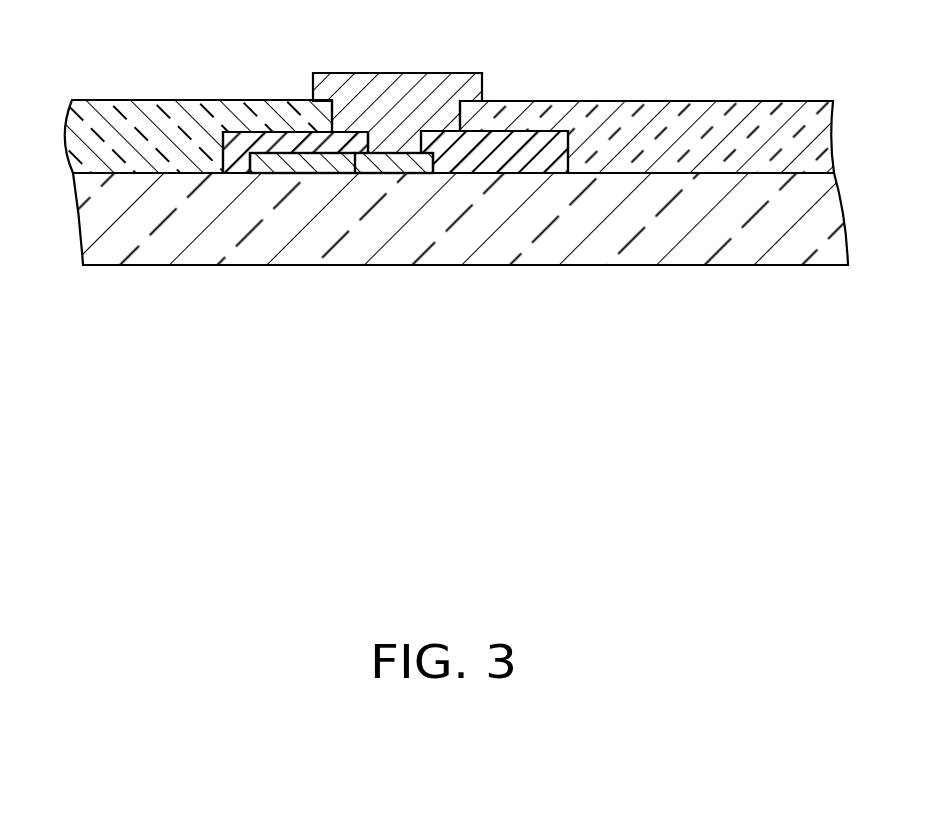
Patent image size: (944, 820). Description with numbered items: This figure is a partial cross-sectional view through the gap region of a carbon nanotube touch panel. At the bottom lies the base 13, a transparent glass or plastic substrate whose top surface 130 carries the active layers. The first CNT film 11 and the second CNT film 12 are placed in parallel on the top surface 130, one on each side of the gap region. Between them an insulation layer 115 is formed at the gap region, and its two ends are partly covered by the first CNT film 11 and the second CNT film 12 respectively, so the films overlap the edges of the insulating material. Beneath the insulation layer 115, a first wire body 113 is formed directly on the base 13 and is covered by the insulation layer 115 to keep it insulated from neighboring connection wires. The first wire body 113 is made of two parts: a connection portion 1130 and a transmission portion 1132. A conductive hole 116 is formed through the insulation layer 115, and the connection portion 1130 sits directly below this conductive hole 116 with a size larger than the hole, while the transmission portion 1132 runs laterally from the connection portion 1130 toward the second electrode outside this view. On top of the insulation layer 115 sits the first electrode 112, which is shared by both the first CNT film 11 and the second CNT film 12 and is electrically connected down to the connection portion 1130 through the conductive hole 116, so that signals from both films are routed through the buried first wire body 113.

The first CNT film 11 is at (176, 110).
The second CNT film 12 is at (693, 130).
The base 13 is at (765, 228).
The first electrode 112 is at (432, 115).
The first wire body 113 is at (460, 338).
The insulation layer 115 is at (532, 155).
The conductive hole 116 is at (375, 134).
The top surface 130 is at (629, 170).
The connection portion 1130 is at (412, 160).
The transmission portion 1132 is at (293, 160).